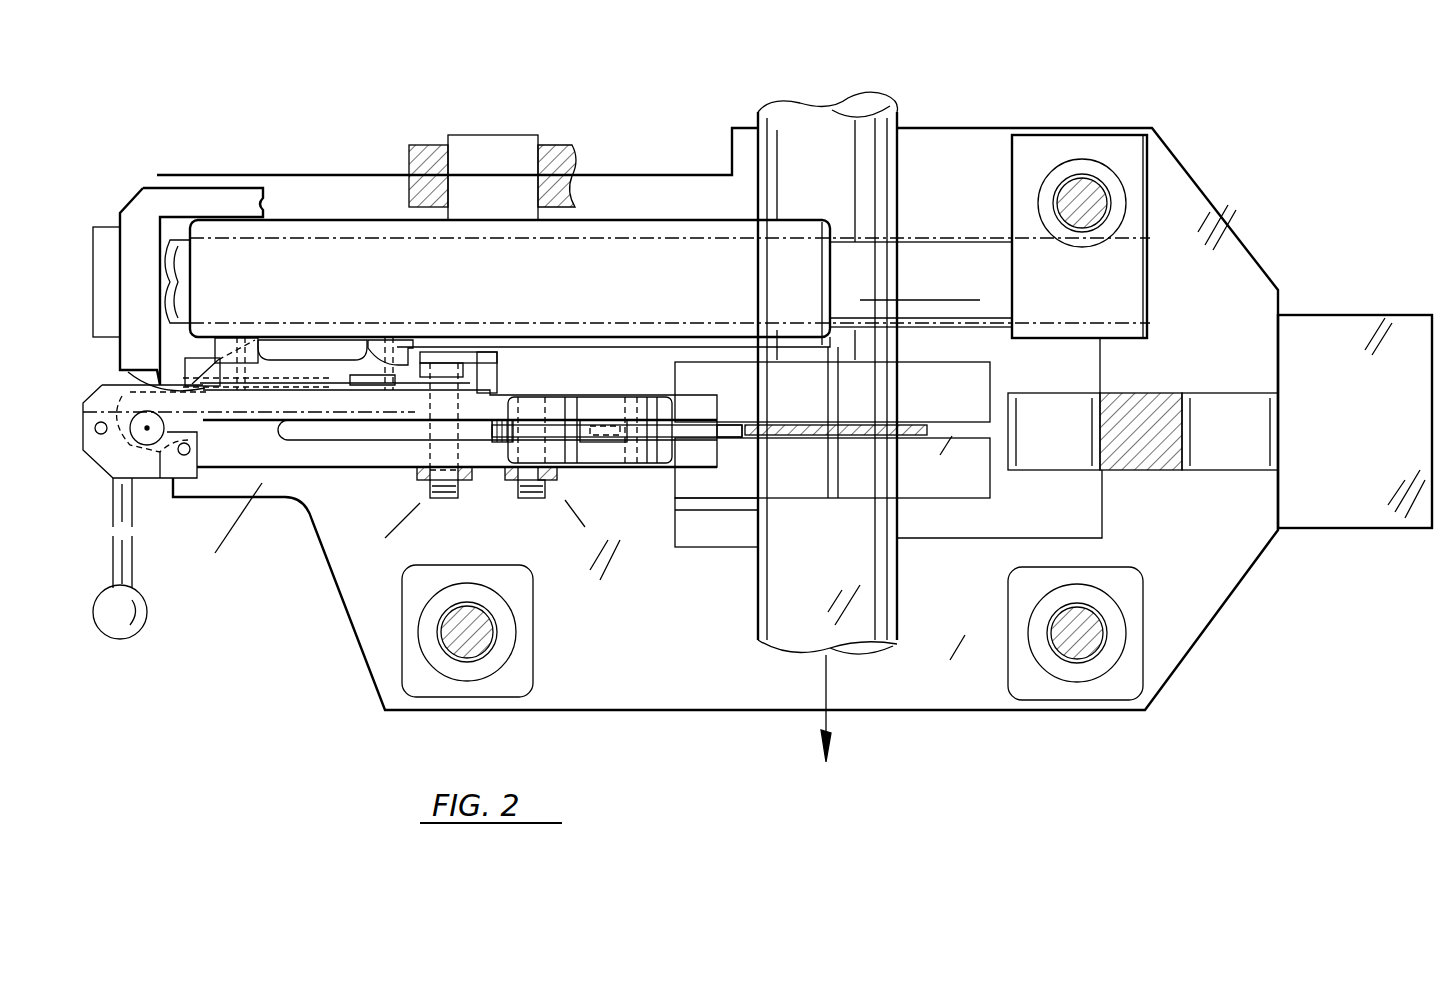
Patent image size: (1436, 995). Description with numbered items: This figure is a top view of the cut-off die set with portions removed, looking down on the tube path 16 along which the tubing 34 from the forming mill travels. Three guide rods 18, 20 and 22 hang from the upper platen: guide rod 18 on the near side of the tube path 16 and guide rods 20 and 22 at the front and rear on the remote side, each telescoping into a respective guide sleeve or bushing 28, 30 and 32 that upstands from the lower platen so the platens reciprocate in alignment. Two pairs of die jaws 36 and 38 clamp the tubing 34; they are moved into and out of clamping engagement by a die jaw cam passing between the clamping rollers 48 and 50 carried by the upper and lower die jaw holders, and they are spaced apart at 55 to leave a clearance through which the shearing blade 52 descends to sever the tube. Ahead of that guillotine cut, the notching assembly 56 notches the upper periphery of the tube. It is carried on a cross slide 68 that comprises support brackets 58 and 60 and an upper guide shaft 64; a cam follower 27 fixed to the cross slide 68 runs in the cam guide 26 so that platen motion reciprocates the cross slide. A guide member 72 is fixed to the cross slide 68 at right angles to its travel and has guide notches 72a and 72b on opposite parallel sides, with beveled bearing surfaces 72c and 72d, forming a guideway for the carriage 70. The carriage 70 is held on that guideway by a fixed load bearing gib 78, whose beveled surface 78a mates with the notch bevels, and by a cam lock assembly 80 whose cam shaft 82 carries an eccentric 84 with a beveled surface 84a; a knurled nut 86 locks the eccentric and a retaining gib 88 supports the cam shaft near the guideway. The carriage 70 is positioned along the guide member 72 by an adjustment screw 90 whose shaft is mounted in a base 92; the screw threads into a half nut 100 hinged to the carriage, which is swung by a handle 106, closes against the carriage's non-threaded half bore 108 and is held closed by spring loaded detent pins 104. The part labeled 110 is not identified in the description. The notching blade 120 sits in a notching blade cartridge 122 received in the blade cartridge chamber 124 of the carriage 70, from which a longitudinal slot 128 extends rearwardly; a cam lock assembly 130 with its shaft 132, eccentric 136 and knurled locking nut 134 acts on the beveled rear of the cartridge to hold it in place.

The tube path 16 is at (828, 690).
The guide rod 18 is at (455, 645).
The guide rod 20 is at (1090, 630).
The guide rod 22 is at (1082, 195).
The cam guide 26 is at (430, 165).
The cam follower 27 is at (515, 145).
The guide sleeve 28 is at (420, 628).
The guide sleeve 30 is at (1100, 680).
The guide sleeve 32 is at (1125, 190).
The tubing 34 is at (895, 586).
The die jaw 36 is at (698, 489).
The die jaw 38 is at (993, 485).
The clamping roller 48 is at (1105, 405).
The clamping roller 50 is at (1220, 410).
The shearing blade 52 is at (905, 425).
The clearance space 55 is at (940, 456).
The notching assembly 56 is at (228, 528).
The support bracket 58 is at (150, 205).
The support bracket 60 is at (1148, 225).
The upper guide shaft 64 is at (940, 258).
The cross slide 68 is at (625, 240).
The carriage 70 is at (102, 396).
The guide member 72 is at (293, 348).
The guide notch 72a is at (405, 370).
The guide notch 72b is at (240, 336).
The beveled bearing surface 72c is at (387, 384).
The beveled bearing surface 72d is at (250, 384).
The fixed load bearing gib 78 is at (210, 364).
The beveled surface 78a is at (112, 366).
The cam lock assembly 80 is at (391, 529).
The cam shaft 82 is at (445, 494).
The eccentric 84 is at (460, 375).
The beveled surface 84a is at (414, 392).
The knurled nut 86 is at (417, 474).
The retaining gib 88 is at (497, 372).
The adjustment screw 90 is at (152, 430).
The base 92 is at (491, 441).
The half nut 100 is at (115, 486).
The spring loaded detent pins 104 is at (190, 449).
The handle 106 is at (130, 640).
The non-threaded half bore 108 is at (150, 425).
The lever 110 is at (152, 470).
The notching blade 120 is at (100, 434).
The notching blade cartridge 122 is at (680, 425).
The blade cartridge chamber 124 is at (590, 412).
The longitudinal slot 128 is at (365, 445).
The cam lock assembly 130 is at (580, 524).
The shaft 132 is at (530, 499).
The knurled locking nut 134 is at (560, 471).
The eccentric 136 is at (503, 444).